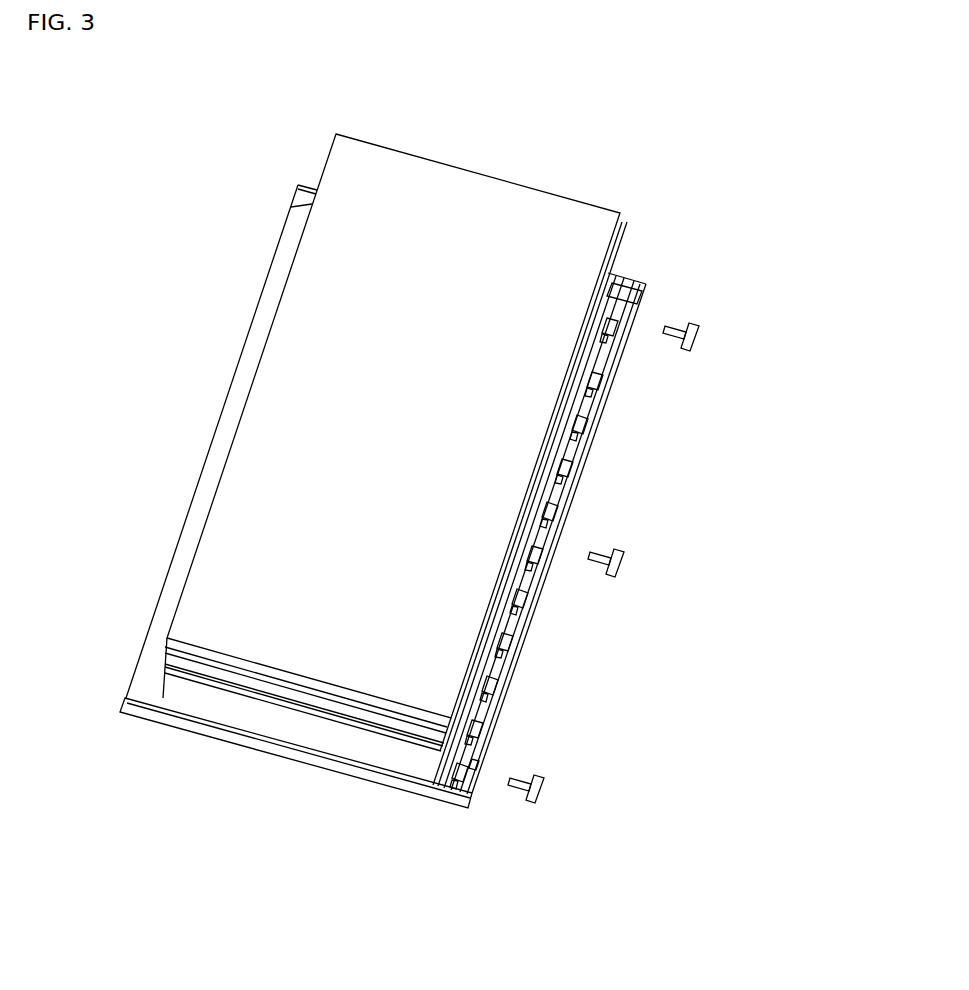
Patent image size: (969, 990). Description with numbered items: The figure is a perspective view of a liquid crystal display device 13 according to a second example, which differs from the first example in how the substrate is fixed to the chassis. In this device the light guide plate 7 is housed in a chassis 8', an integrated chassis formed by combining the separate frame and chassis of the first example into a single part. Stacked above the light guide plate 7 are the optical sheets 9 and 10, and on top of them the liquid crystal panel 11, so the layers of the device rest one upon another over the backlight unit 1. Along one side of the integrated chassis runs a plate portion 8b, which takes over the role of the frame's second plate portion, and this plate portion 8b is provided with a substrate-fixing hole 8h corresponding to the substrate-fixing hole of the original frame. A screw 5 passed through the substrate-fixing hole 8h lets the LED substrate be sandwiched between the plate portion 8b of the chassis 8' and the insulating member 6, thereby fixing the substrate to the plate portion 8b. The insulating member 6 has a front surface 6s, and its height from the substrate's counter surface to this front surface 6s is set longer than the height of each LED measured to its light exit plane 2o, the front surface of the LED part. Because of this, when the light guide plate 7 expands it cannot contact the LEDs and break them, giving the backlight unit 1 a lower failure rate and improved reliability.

The liquid crystal display device 13 is at (663, 157).
The backlight unit 1 is at (652, 272).
The liquid crystal panel 11 is at (158, 613).
The optical sheet 10 is at (152, 649).
The optical sheet 9 is at (152, 668).
The light guide plate 7 is at (152, 688).
The chassis 8' is at (351, 562).
The plate portion 8b is at (500, 696).
The substrate-fixing hole 8h is at (477, 770).
The insulating member 6 is at (621, 283).
The front surface 6s is at (608, 306).
The light exit plane 2o is at (562, 468).
The screw 5 is at (553, 790).